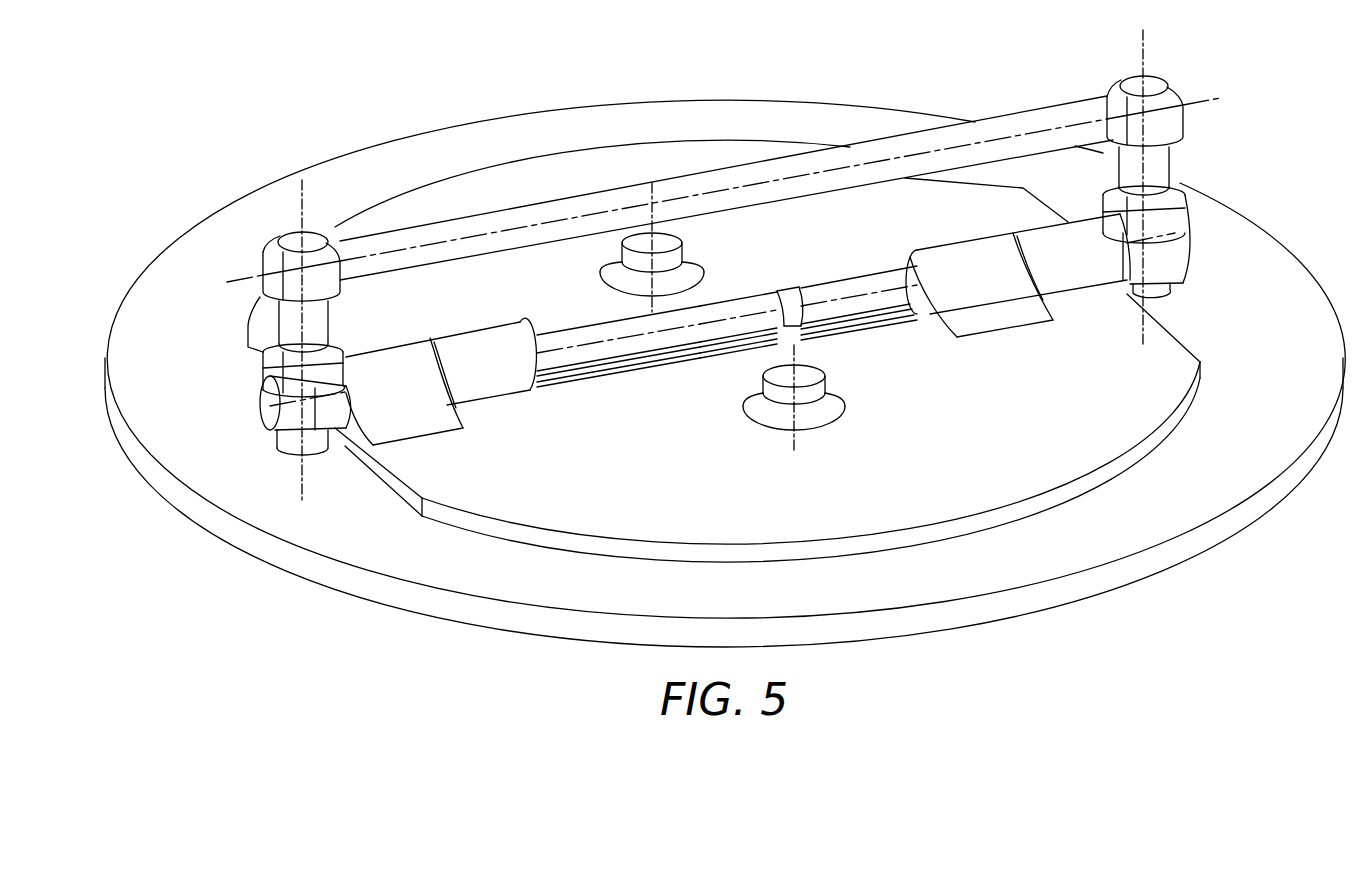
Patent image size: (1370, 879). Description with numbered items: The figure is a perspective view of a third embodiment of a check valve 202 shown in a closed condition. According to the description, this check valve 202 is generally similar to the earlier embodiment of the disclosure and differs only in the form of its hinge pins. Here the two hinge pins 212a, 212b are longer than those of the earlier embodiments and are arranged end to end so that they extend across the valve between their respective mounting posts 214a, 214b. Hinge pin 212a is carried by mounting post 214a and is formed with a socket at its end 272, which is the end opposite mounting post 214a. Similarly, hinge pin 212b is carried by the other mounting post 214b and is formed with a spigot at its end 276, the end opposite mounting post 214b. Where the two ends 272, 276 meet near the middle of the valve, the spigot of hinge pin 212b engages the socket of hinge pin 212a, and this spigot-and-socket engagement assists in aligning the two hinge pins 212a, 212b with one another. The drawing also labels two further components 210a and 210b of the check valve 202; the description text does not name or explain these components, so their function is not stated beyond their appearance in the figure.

The check valve 202 is at (250, 585).
The front arcuate platform segment 210a is at (522, 512).
The rear arcuate platform segment 210b is at (517, 170).
The hinge pin 212a is at (612, 352).
The hinge pin 212b is at (862, 305).
The mounting post 214a is at (264, 357).
The mounting post 214b is at (1180, 217).
The end of hinge pin 272 is at (741, 302).
The end of hinge pin 276 is at (788, 292).